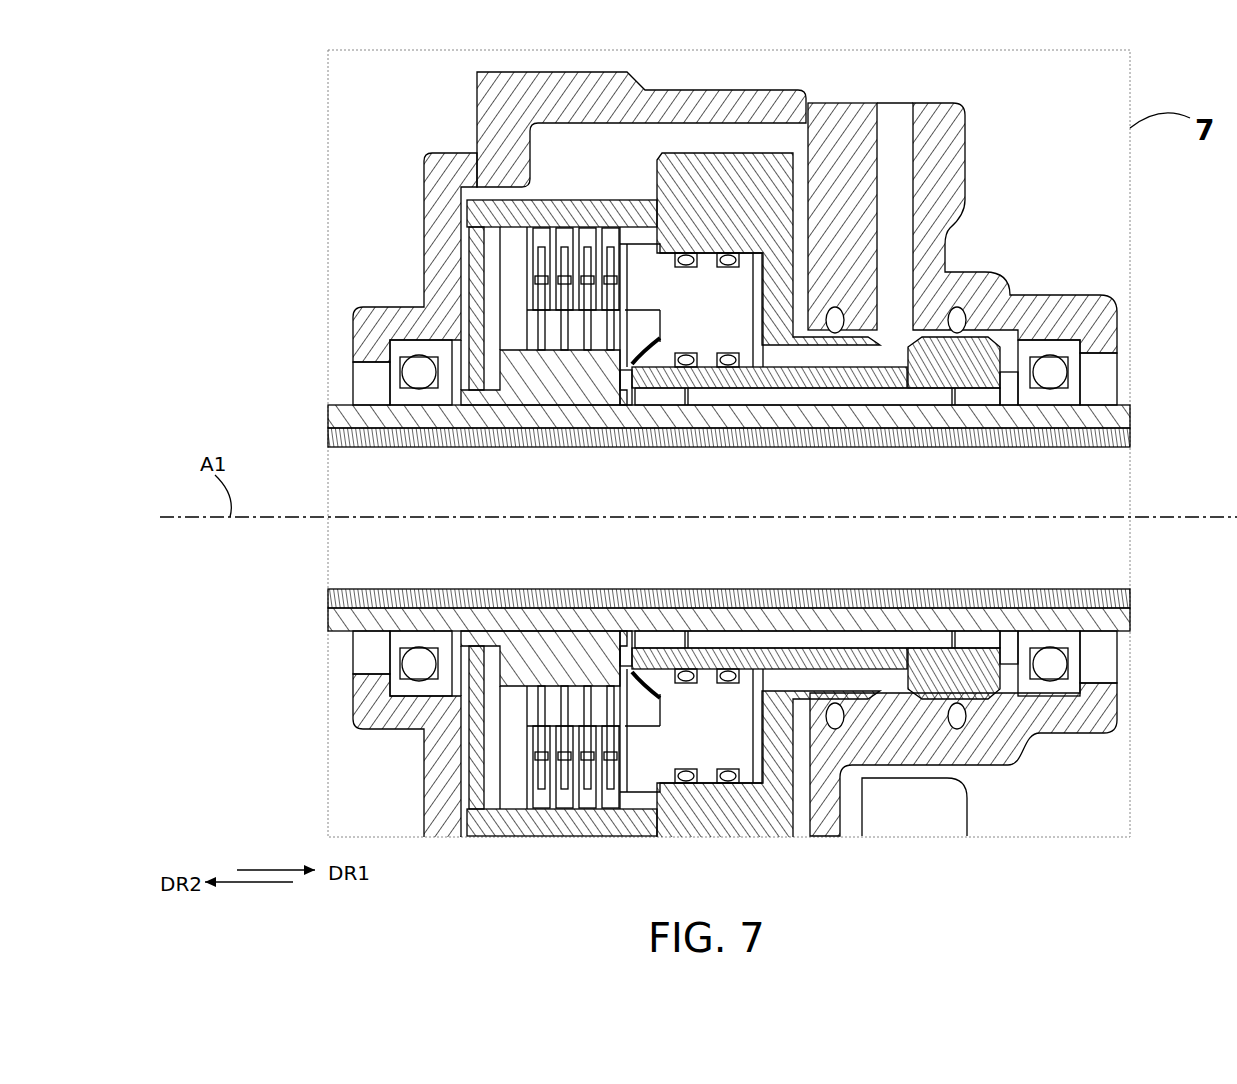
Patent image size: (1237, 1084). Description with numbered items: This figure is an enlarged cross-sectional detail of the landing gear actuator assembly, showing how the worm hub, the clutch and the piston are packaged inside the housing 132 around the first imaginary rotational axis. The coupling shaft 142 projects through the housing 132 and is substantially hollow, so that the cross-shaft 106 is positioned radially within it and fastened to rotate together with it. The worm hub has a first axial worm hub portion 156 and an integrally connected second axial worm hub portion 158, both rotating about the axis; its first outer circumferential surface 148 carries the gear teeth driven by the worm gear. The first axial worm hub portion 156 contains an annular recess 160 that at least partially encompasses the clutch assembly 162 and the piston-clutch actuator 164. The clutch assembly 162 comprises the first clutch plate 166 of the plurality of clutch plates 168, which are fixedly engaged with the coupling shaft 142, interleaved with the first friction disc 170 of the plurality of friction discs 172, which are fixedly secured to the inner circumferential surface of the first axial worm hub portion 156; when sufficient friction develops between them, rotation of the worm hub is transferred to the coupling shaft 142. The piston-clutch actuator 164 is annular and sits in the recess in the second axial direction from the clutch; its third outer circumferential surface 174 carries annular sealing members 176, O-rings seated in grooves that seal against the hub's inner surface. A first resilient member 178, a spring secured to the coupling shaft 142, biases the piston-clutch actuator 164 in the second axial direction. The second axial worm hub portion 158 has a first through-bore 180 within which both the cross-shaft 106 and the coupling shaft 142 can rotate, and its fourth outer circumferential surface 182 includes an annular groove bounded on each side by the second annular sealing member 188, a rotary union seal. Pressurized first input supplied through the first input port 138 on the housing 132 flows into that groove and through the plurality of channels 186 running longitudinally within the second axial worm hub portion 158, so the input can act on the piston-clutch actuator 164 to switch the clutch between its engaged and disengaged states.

The housing 132 is at (477, 115).
The annular recess 160 is at (517, 297).
The coupling shaft 142 is at (328, 405).
The clutch assembly 162 is at (655, 205).
The plurality of clutch plates 168 is at (655, 205).
The plurality of friction discs 172 is at (568, 237).
The first input port 138 is at (905, 95).
The first outer circumferential surface 148 is at (768, 236).
The first axial worm hub portion 156 is at (760, 201).
The third outer circumferential surface 174 is at (667, 247).
The piston-clutch actuator 164 is at (732, 326).
The annular sealing member 176 is at (730, 256).
The second annular sealing member 188 is at (957, 307).
The second axial worm hub portion 158 is at (982, 376).
The first through-bore 180 is at (922, 506).
The cross-shaft 106 is at (328, 590).
The fourth outer circumferential surface 182 is at (940, 712).
The plurality of channels 186 is at (880, 680).
The first resilient member 178 is at (660, 700).
The first friction disc 170 is at (532, 837).
The first clutch plate 166 is at (612, 820).